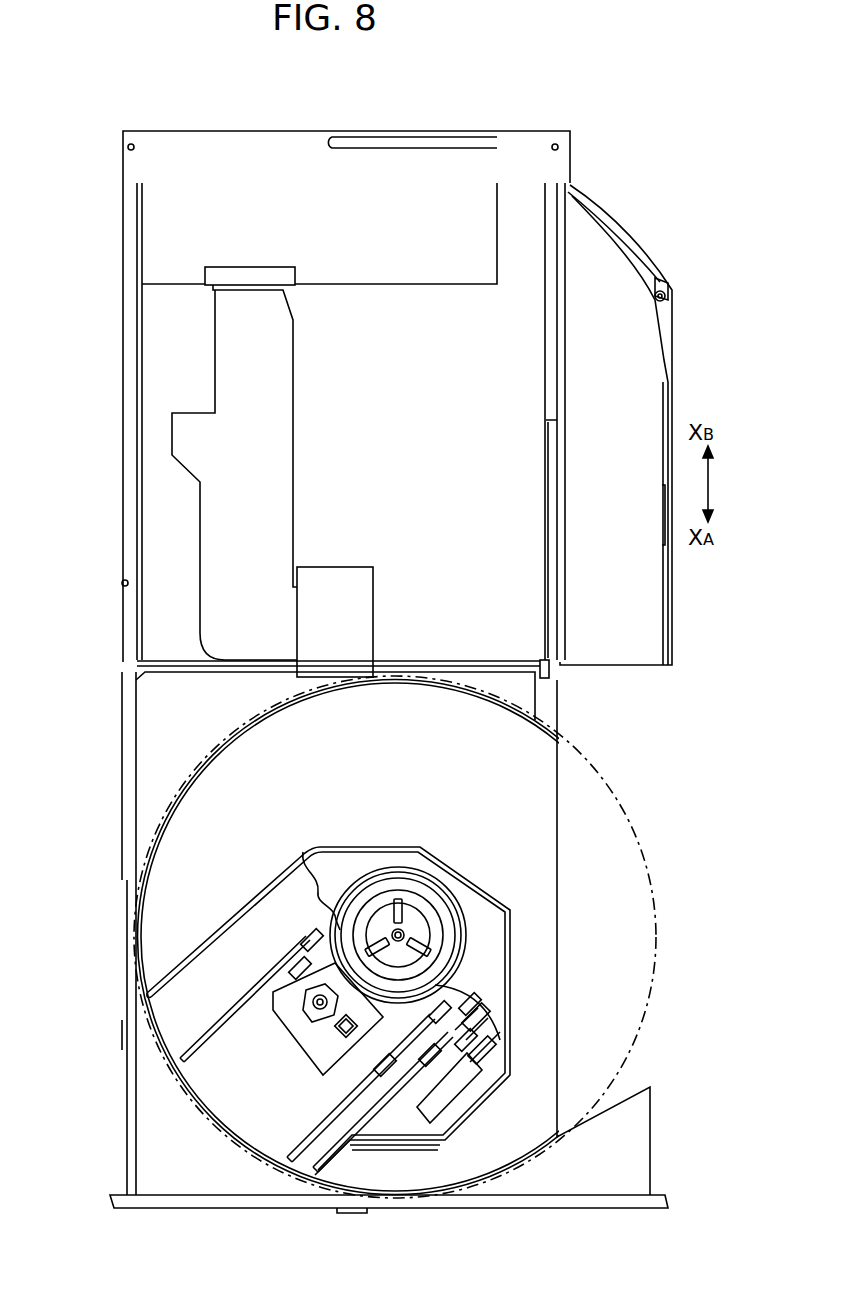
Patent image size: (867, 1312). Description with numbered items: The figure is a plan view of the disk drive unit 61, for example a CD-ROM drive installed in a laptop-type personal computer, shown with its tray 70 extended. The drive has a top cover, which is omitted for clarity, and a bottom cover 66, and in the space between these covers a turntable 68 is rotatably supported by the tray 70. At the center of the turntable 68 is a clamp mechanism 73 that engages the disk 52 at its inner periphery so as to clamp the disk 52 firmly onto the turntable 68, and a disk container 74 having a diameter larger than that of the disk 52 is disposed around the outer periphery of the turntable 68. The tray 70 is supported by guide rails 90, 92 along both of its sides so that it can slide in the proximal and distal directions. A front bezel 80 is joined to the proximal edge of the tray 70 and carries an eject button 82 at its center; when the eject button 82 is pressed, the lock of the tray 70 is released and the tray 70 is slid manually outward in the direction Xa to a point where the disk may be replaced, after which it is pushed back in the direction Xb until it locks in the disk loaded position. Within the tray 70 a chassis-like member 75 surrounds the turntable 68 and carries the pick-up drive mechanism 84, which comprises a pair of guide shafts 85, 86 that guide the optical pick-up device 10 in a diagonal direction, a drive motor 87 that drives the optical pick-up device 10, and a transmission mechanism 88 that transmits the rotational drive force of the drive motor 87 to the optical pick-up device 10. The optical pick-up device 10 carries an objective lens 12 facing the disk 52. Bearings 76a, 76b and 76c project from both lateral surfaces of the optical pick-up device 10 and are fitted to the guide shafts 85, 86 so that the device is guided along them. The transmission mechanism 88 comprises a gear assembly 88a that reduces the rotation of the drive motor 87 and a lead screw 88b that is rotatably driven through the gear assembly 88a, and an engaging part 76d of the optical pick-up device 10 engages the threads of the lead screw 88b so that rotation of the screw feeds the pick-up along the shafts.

The disk drive unit 61 is at (112, 135).
The bottom cover 66 is at (672, 398).
The guide rail 92 is at (552, 676).
The guide rail 90 is at (122, 748).
The front bezel 80 is at (493, 1210).
The eject button 82 is at (340, 1212).
The disk container 74 is at (568, 734).
The disk 52 is at (598, 766).
The chassis 75 is at (358, 856).
The turntable 68 is at (398, 868).
The clamp mechanism 73 is at (404, 905).
The bearing 76a is at (315, 940).
The guide shaft 85 is at (224, 1016).
The optical pick-up device 10 is at (300, 962).
The objective lens 12 is at (318, 1016).
The guide shaft 86 is at (330, 1130).
The lead screw 88b is at (395, 1161).
The bearing 76b is at (384, 1065).
The engaging part 76d is at (438, 1070).
The drive motor 87 is at (468, 1100).
The pick-up drive mechanism 84 is at (490, 1010).
The bearing 76c is at (478, 980).
The gear assembly 88a is at (488, 1010).
The transmission mechanism 88 is at (494, 1045).
The tray 70 is at (118, 1034).